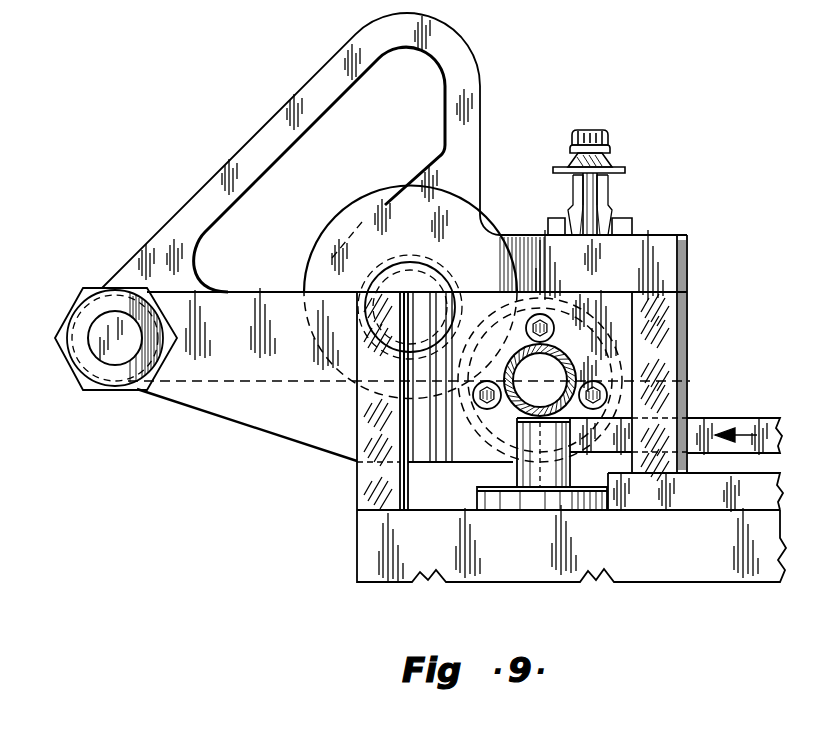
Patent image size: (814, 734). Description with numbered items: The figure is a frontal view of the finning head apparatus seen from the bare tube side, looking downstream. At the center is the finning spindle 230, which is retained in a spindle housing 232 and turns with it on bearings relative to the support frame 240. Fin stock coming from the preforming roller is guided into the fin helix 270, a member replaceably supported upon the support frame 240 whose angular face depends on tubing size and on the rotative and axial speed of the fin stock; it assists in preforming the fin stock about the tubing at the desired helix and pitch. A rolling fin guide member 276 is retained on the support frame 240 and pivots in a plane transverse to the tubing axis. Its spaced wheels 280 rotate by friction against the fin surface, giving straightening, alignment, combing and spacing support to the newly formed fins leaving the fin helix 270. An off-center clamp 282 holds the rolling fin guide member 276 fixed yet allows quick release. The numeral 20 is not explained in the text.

The shaft / spindle 20 is at (563, 372).
The finning spindle 230 is at (513, 477).
The spindle housing 232 is at (477, 500).
The support frame 240 is at (250, 418).
The fin helix 270 is at (618, 360).
The rolling fin guide member 276 is at (262, 143).
The spaced wheels 280 is at (357, 226).
The off-center clamp 282 is at (618, 153).